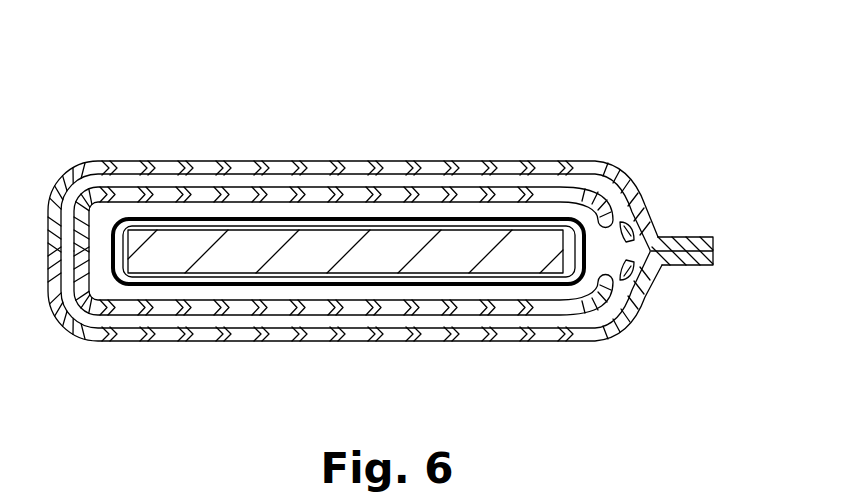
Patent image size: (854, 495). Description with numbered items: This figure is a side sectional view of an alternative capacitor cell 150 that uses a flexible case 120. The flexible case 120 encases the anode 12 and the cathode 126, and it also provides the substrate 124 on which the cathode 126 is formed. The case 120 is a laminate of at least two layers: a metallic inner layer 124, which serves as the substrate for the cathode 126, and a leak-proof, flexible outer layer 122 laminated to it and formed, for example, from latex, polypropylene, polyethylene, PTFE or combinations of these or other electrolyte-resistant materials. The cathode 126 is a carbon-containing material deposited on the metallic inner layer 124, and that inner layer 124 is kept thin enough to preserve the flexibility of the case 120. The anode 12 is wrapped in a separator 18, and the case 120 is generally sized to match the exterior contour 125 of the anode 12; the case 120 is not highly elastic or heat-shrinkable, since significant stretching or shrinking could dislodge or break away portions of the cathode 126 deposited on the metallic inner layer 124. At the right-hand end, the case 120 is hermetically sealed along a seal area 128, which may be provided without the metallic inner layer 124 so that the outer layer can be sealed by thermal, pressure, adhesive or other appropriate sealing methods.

The capacitor cell 150 is at (386, 31).
The flexible case 120 is at (644, 176).
The outer layer 122 is at (487, 166).
The metallic inner layer 124 is at (372, 172).
The cathode 126 is at (192, 190).
The exterior contour 125 is at (394, 303).
The seal area 128 is at (667, 270).
The separator 18 is at (273, 286).
The anode 12 is at (162, 263).